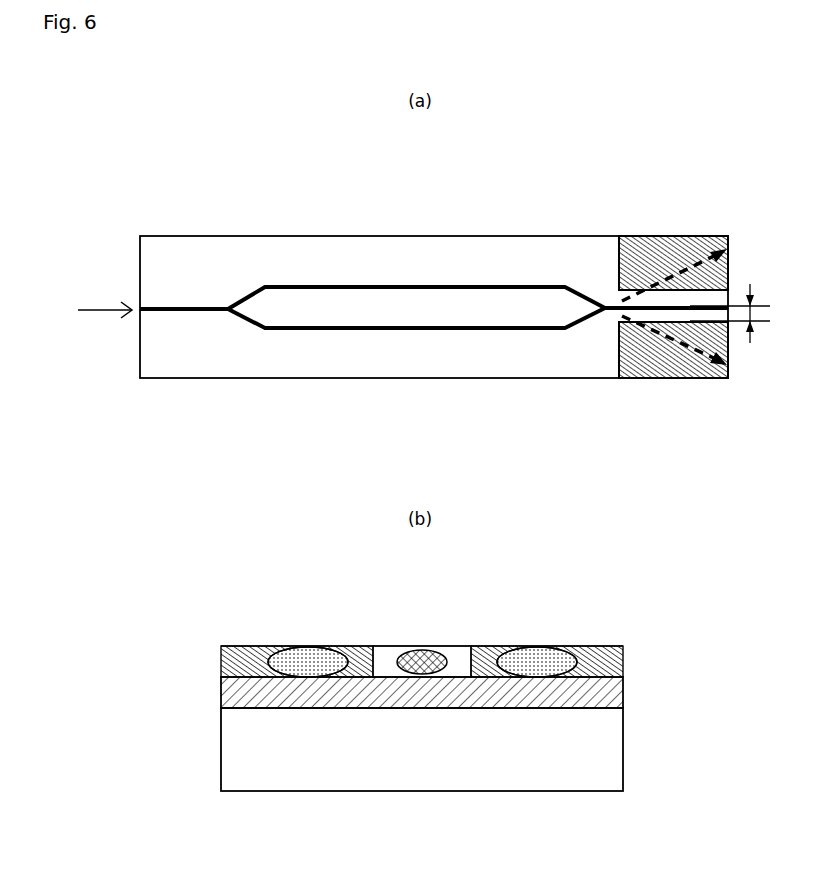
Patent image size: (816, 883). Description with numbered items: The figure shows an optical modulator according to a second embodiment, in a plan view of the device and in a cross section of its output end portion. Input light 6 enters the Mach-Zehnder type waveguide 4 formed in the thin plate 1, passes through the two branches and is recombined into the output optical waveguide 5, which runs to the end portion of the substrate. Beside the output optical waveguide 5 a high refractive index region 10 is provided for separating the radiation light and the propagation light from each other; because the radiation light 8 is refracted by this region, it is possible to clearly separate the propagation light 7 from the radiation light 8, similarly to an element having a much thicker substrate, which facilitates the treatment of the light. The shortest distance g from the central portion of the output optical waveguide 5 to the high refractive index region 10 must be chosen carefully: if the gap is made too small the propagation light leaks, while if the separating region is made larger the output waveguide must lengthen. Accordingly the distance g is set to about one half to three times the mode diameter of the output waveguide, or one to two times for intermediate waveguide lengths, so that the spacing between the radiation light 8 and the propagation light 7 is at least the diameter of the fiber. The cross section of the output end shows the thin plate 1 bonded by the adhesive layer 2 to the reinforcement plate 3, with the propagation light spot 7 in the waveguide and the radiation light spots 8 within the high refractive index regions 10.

The thin plate 1 is at (440, 262).
The adhesive layer 2 is at (590, 688).
The reinforcement plate 3 is at (585, 750).
The Mach-Zehnder type waveguide 4 is at (483, 336).
The output optical waveguide 5 is at (695, 302).
The input light 6 is at (102, 311).
The propagation light 7 is at (418, 650).
The radiation light 8 is at (650, 320).
The high refractive index region 10 is at (645, 345).
The shortest distance g is at (766, 313).